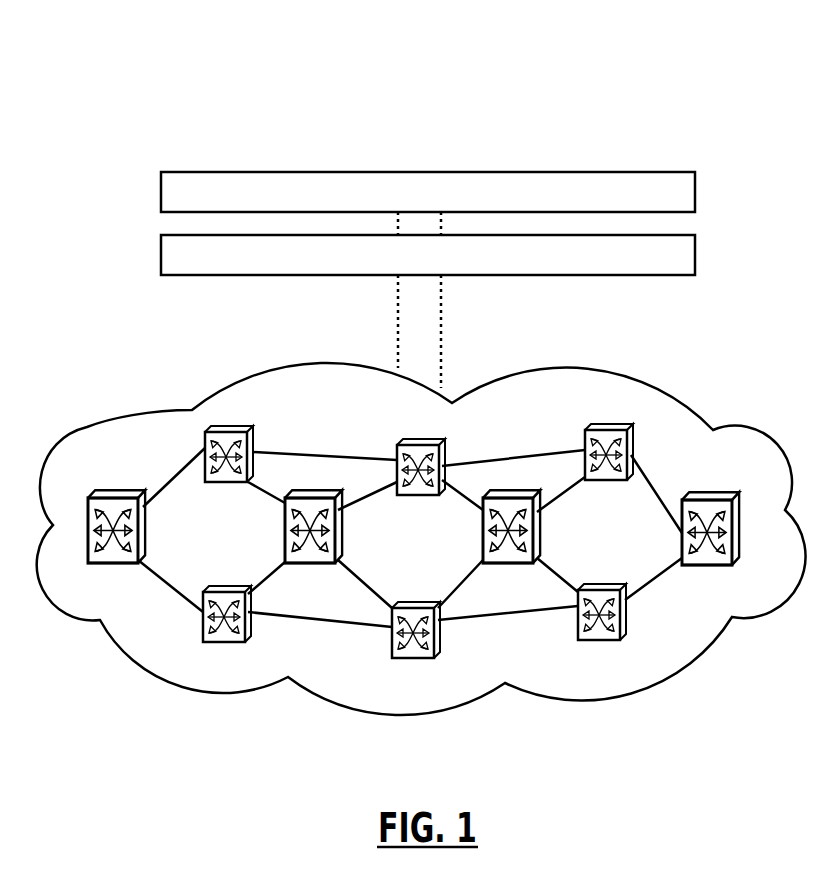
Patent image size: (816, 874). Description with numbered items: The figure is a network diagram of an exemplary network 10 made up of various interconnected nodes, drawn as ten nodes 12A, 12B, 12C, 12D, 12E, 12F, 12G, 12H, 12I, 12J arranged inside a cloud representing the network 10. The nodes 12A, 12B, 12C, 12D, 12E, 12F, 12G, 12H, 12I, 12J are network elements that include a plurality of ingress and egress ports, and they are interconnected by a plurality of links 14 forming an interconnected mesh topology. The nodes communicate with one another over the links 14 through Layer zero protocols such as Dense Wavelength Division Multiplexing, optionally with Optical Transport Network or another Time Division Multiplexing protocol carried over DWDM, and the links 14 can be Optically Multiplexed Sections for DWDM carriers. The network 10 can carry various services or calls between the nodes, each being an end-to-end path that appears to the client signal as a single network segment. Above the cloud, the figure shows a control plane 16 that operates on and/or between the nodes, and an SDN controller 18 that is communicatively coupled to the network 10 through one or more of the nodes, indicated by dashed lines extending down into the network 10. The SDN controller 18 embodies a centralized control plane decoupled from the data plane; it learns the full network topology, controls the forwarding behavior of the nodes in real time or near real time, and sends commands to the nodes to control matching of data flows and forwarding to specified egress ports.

The network 10 is at (474, 94).
The node 12A is at (122, 494).
The node 12B is at (313, 564).
The node 12C is at (510, 564).
The node 12D is at (705, 566).
The node 12E is at (236, 430).
The node 12F is at (415, 495).
The node 12G is at (602, 479).
The node 12H is at (228, 590).
The node 12I is at (416, 606).
The node 12J is at (603, 588).
The links 14 is at (324, 454).
The control plane 16 is at (696, 249).
The SDN controller 18 is at (696, 186).